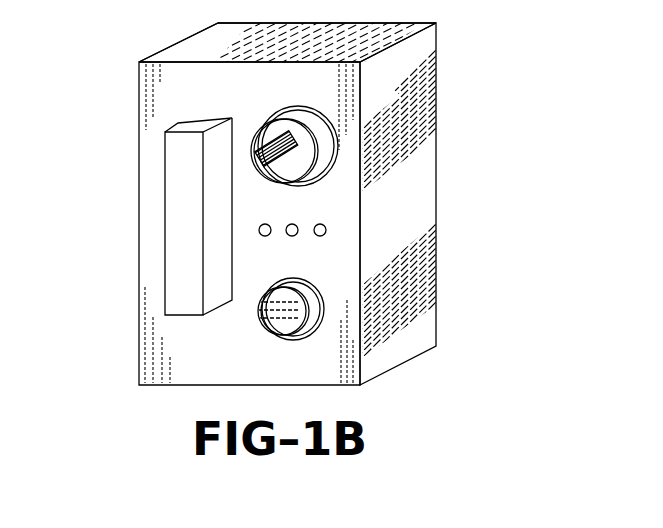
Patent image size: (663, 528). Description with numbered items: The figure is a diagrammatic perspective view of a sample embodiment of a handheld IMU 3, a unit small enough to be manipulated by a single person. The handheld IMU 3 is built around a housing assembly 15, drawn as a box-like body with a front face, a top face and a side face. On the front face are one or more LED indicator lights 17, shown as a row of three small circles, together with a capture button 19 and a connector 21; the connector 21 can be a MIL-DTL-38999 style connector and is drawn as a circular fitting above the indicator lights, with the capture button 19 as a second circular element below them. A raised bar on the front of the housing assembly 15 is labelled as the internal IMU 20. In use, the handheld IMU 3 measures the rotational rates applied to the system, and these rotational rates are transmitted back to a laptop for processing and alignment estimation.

The handheld IMU 3 is at (438, 142).
The housing assembly 15 is at (203, 42).
The LED indicator lights 17 is at (322, 223).
The capture button 19 is at (274, 328).
The internal IMU 20 is at (176, 216).
The connector 21 is at (298, 108).